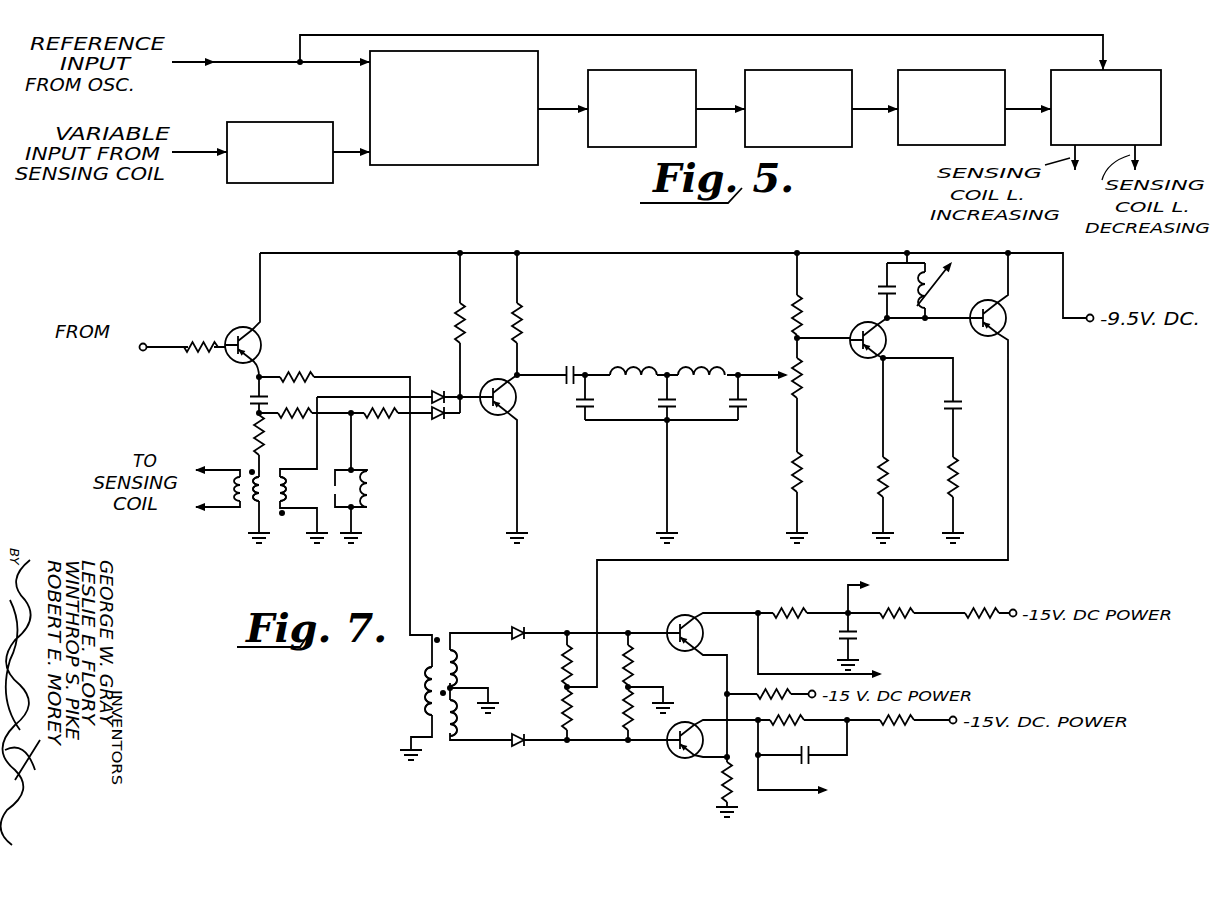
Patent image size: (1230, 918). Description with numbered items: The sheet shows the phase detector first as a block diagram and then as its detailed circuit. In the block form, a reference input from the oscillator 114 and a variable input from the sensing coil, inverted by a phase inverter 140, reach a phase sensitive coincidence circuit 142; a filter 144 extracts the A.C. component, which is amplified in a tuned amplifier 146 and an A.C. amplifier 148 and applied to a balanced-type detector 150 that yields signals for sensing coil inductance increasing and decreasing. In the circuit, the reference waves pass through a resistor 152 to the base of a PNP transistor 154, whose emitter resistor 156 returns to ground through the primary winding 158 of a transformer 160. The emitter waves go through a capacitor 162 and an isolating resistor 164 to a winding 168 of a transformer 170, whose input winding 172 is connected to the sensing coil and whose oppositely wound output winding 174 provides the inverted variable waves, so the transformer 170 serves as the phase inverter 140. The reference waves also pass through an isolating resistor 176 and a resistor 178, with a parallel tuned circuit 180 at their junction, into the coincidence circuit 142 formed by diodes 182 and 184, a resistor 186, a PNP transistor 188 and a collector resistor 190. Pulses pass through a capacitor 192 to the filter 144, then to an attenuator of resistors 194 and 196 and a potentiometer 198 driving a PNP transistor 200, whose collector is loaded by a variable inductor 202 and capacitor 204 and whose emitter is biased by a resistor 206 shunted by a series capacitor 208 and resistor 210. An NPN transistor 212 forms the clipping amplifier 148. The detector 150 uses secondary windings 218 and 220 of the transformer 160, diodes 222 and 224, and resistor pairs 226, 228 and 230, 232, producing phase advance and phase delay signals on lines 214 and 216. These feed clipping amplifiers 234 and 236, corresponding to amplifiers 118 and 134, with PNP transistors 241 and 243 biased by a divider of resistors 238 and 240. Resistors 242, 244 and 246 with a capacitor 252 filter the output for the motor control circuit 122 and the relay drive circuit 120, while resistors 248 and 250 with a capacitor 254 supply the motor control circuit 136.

In FIG. 5, the phase inverter 140 is at (314, 183).
In FIG. 5, the phase sensitive coincidence circuit 142 is at (470, 165).
In FIG. 7, the phase sensitive coincidence circuit 142 is at (506, 362).
In FIG. 5, the filter 144 is at (690, 55).
In FIG. 7, the filter 144 is at (693, 359).
In FIG. 5, the tuned amplifier 146 is at (795, 70).
In FIG. 7, the tuned amplifier 146 is at (858, 326).
In FIG. 5, the A.C. amplifier 148 is at (962, 70).
In FIG. 7, the A.C. amplifier 148 is at (1003, 329).
In FIG. 5, the balanced-type detector 150 is at (1150, 70).
In FIG. 7, the balanced-type detector 150 is at (545, 692).
In FIG. 7, the oscillator 114 is at (78, 356).
In FIG. 7, the resistor 152 is at (202, 345).
In FIG. 7, the PNP transistor 154 is at (263, 340).
In FIG. 7, the emitter resistor 156 is at (298, 372).
In FIG. 7, the capacitor 162 is at (251, 400).
In FIG. 7, the isolating resistor 164 is at (251, 438).
In FIG. 7, the isolating resistor 176 is at (286, 420).
In FIG. 7, the resistor 178 is at (373, 422).
In FIG. 7, the parallel tuned circuit 180 is at (358, 484).
In FIG. 7, the diode 182 is at (440, 425).
In FIG. 7, the diode 184 is at (431, 388).
In FIG. 7, the resistor 186 is at (453, 317).
In FIG. 7, the PNP transistor 188 is at (516, 403).
In FIG. 7, the resistor 190 is at (531, 330).
In FIG. 7, the capacitor 192 is at (576, 368).
In FIG. 7, the resistor 194 is at (790, 312).
In FIG. 7, the resistor 196 is at (790, 484).
In FIG. 7, the potentiometer 198 is at (805, 387).
In FIG. 7, the PNP transistor 200 is at (889, 346).
In FIG. 7, the variable inductor 202 is at (936, 300).
In FIG. 7, the capacitor 204 is at (876, 290).
In FIG. 7, the resistor 206 is at (877, 473).
In FIG. 7, the capacitor 208 is at (946, 410).
In FIG. 7, the resistor 210 is at (948, 471).
In FIG. 7, the NPN transistor 212 is at (979, 338).
In FIG. 7, the transformer 170 is at (300, 467).
In FIG. 7, the winding 168 is at (252, 510).
In FIG. 7, the output winding 174 is at (298, 514).
In FIG. 7, the input winding 172 is at (232, 506).
In FIG. 7, the transformer 160 is at (470, 622).
In FIG. 7, the primary winding 158 is at (425, 699).
In FIG. 7, the secondary winding 218 is at (456, 657).
In FIG. 7, the secondary winding 220 is at (449, 721).
In FIG. 7, the diode 222 is at (516, 628).
In FIG. 7, the diode 224 is at (517, 749).
In FIG. 7, the resistor 226 is at (558, 661).
In FIG. 7, the resistor 228 is at (558, 702).
In FIG. 7, the resistor 230 is at (633, 668).
In FIG. 7, the resistor 232 is at (621, 701).
In FIG. 7, the line 214 is at (608, 633).
In FIG. 7, the line 216 is at (590, 748).
In FIG. 7, the PNP transistor 241 is at (689, 620).
In FIG. 7, the PNP transistor 243 is at (665, 759).
In FIG. 7, the amplifier 118 is at (673, 612).
In FIG. 7, the clipping amplifier 234 is at (741, 648).
In FIG. 7, the clipping amplifier 236 is at (718, 717).
In FIG. 7, the amplifier 134 is at (703, 775).
In FIG. 7, the resistor 238 is at (737, 687).
In FIG. 7, the resistor 240 is at (735, 790).
In FIG. 7, the resistor 242 is at (797, 608).
In FIG. 7, the resistor 244 is at (898, 626).
In FIG. 7, the resistor 246 is at (976, 626).
In FIG. 7, the capacitor 252 is at (840, 638).
In FIG. 7, the resistor 248 is at (793, 728).
In FIG. 7, the resistor 250 is at (888, 729).
In FIG. 7, the capacitor 254 is at (810, 761).
In FIG. 7, the motor control circuit 122 is at (1043, 586).
In FIG. 7, the relay drive circuit 120 is at (1051, 675).
In FIG. 7, the motor control circuit 136 is at (944, 803).